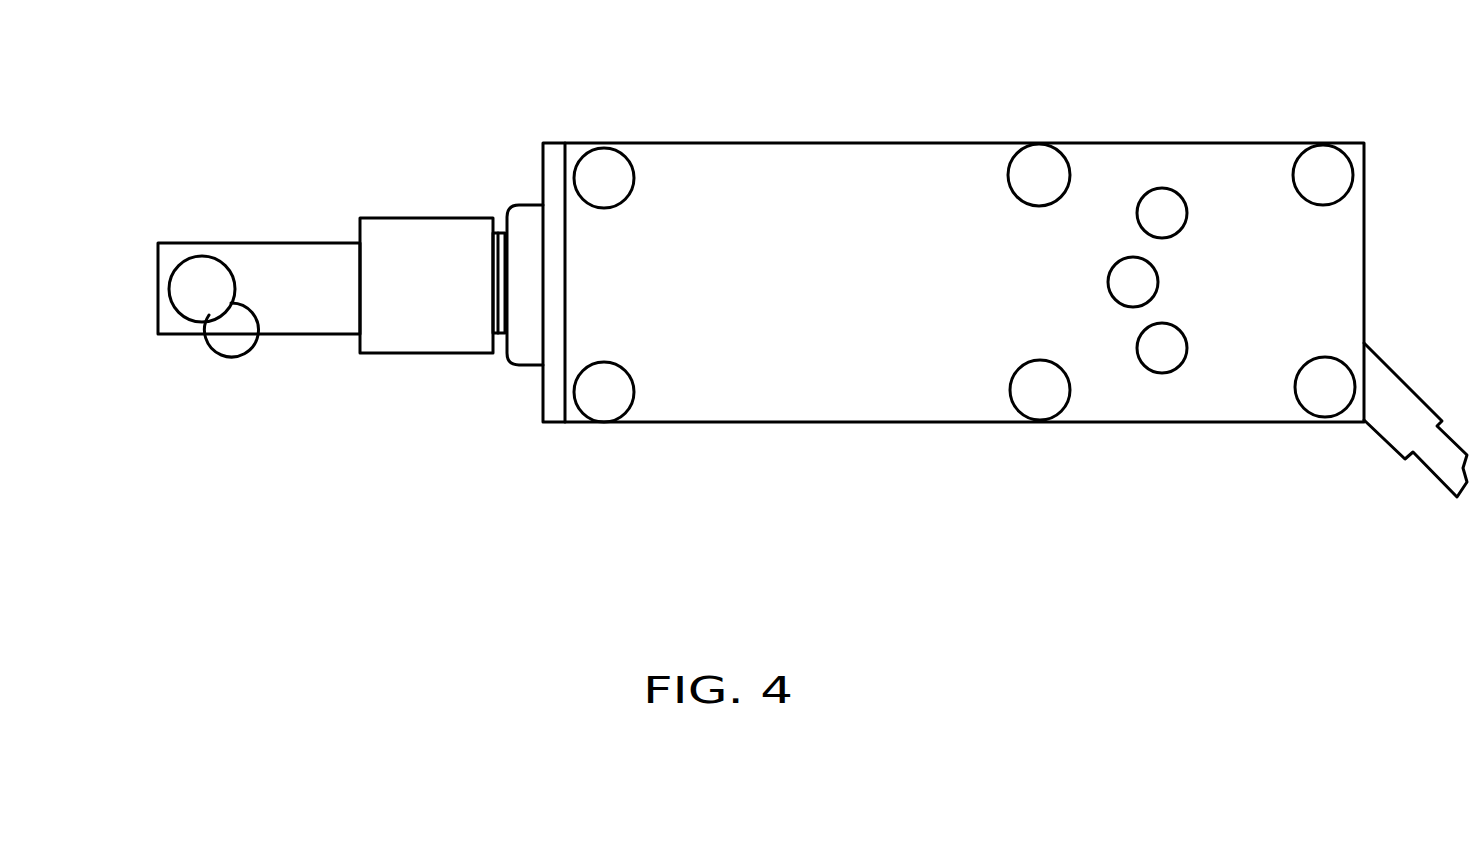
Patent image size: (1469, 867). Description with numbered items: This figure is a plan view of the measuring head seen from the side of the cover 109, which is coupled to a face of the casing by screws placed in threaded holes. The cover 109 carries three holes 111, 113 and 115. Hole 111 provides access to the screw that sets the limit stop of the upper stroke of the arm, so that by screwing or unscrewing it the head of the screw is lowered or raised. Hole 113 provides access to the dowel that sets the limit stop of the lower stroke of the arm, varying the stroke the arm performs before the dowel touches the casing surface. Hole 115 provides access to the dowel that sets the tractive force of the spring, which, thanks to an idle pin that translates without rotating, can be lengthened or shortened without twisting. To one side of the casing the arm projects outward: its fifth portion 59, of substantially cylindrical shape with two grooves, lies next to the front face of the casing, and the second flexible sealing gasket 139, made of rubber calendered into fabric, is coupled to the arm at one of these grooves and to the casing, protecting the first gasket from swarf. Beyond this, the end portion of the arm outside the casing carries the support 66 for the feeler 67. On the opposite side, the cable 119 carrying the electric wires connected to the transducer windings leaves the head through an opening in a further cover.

The cover 109 is at (825, 178).
The hole 111 is at (1162, 203).
The hole 113 is at (1165, 350).
The hole 115 is at (1129, 283).
The cable 119 is at (1433, 450).
The feeler 67 is at (199, 278).
The support 66 is at (406, 238).
The fifth portion 59 is at (496, 335).
The second flexible sealing gasket 139 is at (527, 348).